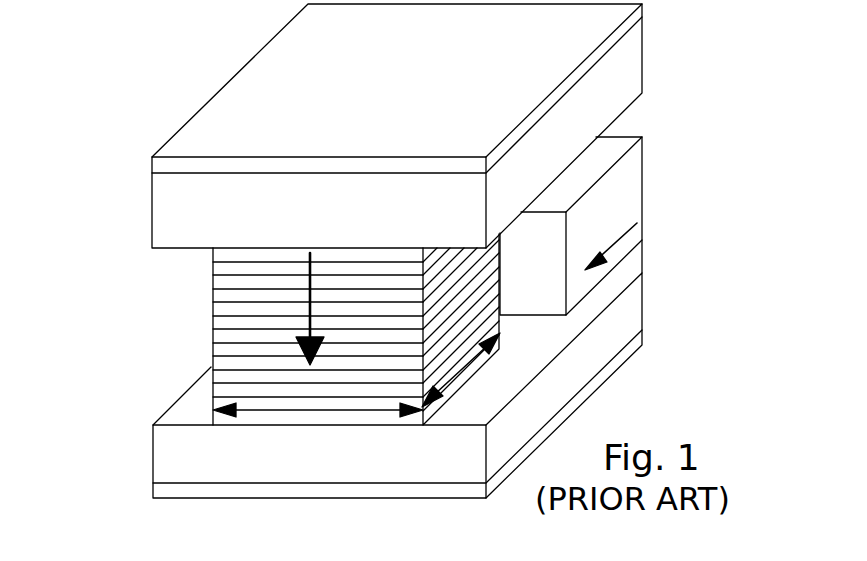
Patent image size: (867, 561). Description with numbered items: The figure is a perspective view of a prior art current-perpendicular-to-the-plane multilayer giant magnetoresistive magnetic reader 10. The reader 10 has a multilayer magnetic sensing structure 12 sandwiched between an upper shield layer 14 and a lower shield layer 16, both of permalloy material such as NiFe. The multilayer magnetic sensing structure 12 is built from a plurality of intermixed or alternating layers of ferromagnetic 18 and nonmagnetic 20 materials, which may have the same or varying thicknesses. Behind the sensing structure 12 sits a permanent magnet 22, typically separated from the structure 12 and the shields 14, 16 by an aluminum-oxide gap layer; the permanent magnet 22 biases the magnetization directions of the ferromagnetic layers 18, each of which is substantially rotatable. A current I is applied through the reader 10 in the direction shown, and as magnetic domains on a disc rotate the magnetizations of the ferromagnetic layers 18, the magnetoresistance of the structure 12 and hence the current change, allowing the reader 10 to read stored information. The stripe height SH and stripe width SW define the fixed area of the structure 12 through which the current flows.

The CPP multilayer GMR magnetic reader 10 is at (228, 52).
The multilayer magnetic sensing structure 12 is at (104, 278).
The shield layer 14 is at (638, 58).
The shield layer 16 is at (637, 303).
The ferromagnetic layer 18 is at (213, 296).
The nonmagnetic layer 20 is at (213, 256).
The permanent magnet 22 is at (638, 157).